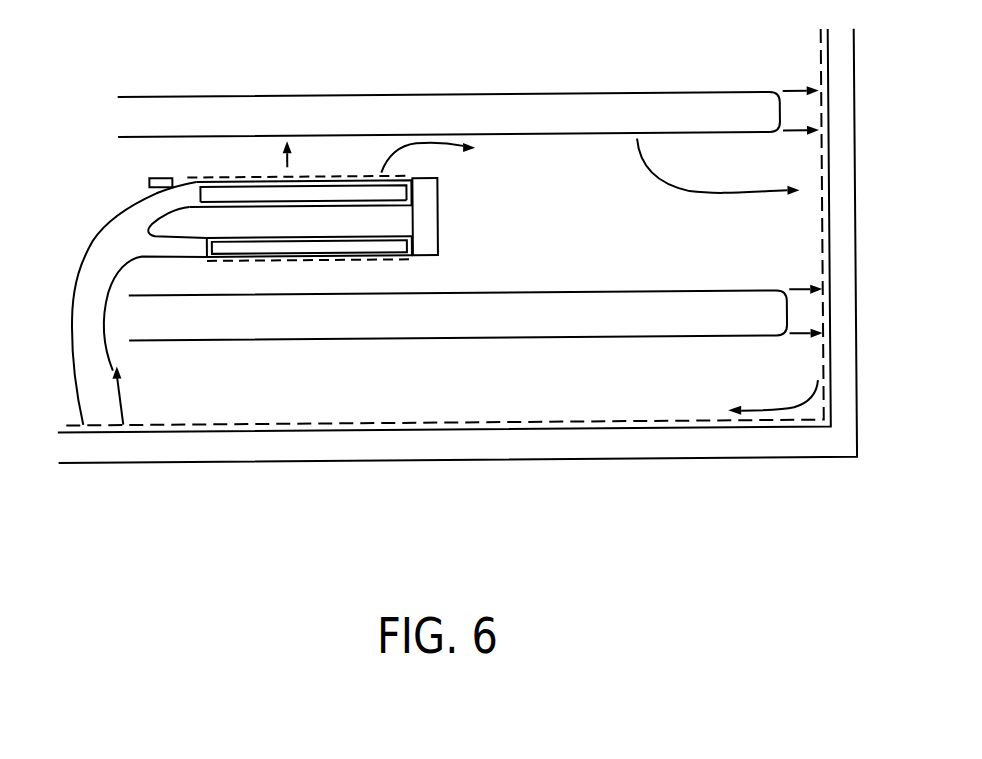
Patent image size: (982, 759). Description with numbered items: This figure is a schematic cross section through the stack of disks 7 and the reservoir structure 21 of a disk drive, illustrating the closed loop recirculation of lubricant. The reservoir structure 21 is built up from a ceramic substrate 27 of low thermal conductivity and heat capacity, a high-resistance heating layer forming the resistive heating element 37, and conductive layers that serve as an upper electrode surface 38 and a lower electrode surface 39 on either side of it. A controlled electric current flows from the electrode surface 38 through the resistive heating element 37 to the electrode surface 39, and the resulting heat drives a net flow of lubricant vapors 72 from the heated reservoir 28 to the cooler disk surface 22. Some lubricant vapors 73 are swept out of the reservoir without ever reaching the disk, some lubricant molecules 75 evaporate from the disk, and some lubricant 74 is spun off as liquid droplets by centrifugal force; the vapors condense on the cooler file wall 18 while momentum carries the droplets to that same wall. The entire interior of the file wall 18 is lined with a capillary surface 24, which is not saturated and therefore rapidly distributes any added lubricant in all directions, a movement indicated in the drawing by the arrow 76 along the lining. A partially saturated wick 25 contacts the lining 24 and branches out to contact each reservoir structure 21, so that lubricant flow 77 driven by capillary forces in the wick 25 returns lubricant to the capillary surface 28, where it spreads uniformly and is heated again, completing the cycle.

The disks 7 is at (452, 205).
The file wall 18 is at (855, 240).
The reservoir structure 21 is at (329, 145).
The disk surface 22 is at (662, 93).
The capillary surface 24 is at (440, 422).
The wick 25 is at (92, 237).
The ceramic substrate 27 is at (274, 215).
The capillary surface 28 is at (206, 176).
The resistive heating element 37 is at (243, 193).
The electrode surface 38 is at (222, 176).
The electrode surface 39 is at (256, 200).
The lubricant vapors 72 is at (288, 164).
The lubricant vapors 73 is at (418, 137).
The lubricant droplets 74 is at (800, 90).
The lubricant molecules 75 is at (761, 195).
The flow arrow 76 is at (767, 409).
The lubricant flow 77 is at (150, 411).